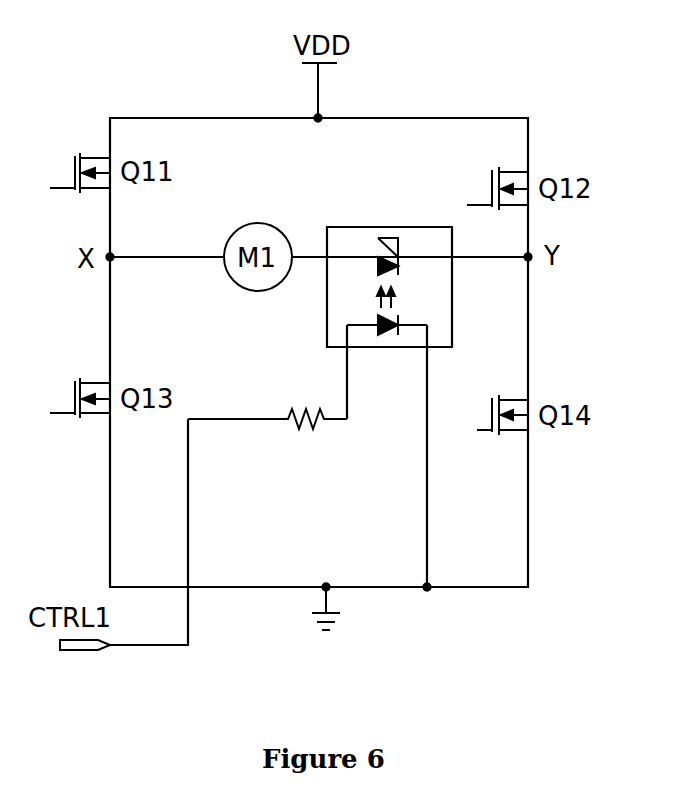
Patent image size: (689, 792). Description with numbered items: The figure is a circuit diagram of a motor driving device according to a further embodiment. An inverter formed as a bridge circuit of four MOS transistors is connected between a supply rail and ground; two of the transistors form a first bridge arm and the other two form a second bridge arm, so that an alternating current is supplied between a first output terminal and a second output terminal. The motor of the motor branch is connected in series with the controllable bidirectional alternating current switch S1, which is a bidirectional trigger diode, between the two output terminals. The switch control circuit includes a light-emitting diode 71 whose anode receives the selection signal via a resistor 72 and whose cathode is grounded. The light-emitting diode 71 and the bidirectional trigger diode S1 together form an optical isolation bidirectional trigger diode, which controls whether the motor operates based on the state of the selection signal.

The light-emitting diode 71 is at (400, 328).
The resistor 72 is at (310, 408).
The controllable bidirectional alternating current switch S1 is at (452, 228).